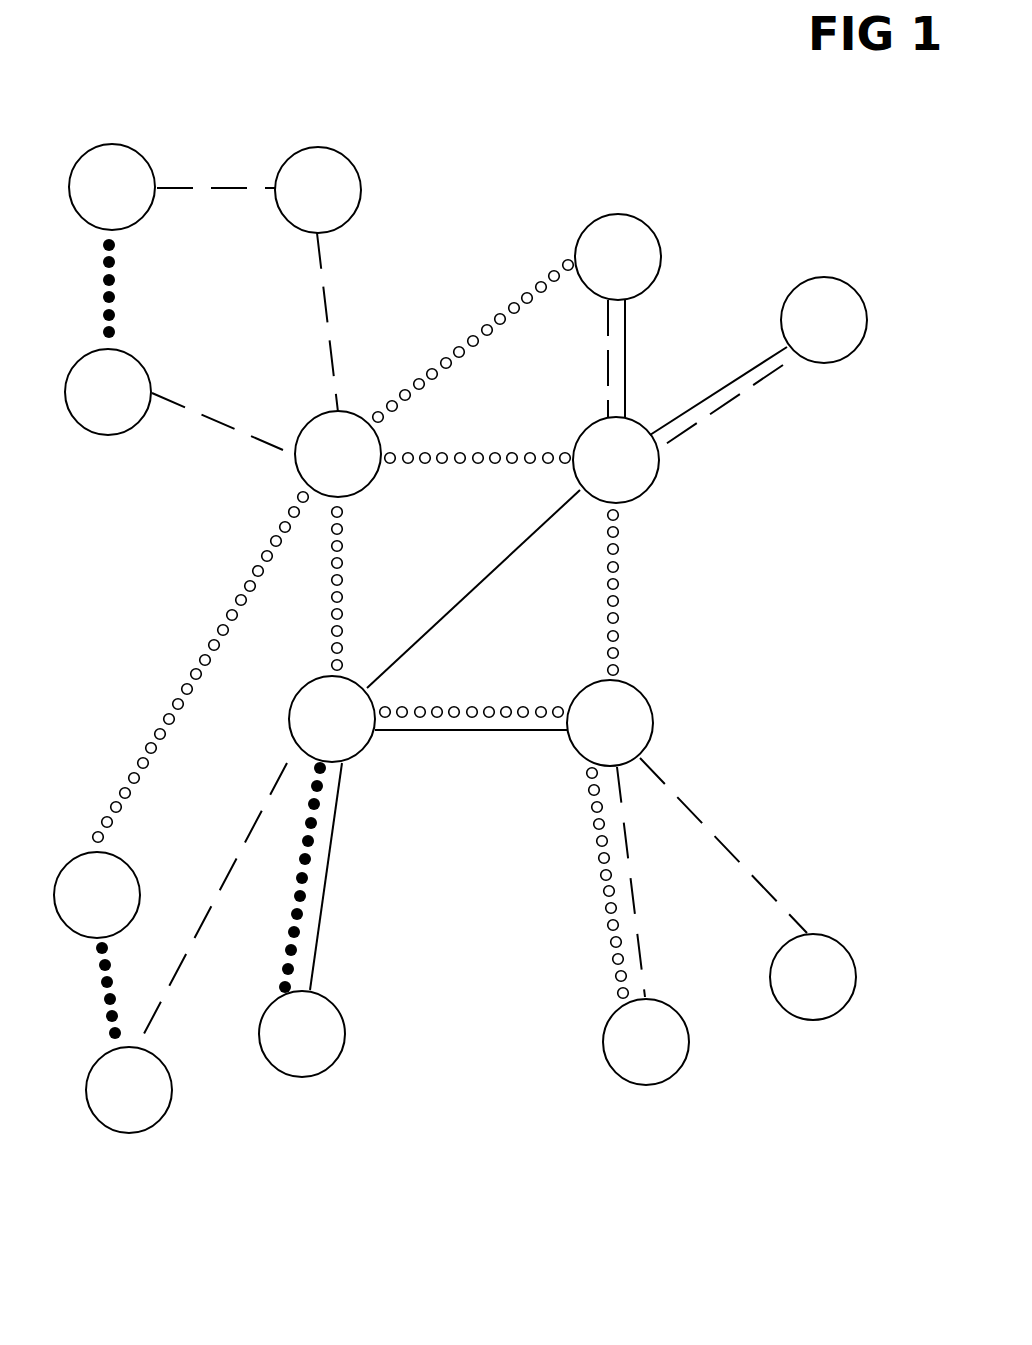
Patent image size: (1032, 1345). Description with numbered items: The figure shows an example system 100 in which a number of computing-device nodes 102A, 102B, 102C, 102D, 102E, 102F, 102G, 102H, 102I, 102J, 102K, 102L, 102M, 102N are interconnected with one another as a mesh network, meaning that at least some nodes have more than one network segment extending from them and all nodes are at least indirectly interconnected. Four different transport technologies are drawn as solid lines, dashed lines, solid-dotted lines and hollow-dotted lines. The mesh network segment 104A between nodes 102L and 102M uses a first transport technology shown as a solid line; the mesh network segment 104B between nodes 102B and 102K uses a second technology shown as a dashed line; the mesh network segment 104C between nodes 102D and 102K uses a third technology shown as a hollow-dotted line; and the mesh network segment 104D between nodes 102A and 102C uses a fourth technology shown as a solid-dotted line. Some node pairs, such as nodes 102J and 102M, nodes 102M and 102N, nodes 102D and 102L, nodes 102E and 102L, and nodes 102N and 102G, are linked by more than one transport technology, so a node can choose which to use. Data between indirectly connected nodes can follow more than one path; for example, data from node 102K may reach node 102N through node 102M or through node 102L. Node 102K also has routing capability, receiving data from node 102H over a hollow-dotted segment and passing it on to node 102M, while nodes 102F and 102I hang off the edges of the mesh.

The system 100 is at (468, 1090).
The node 102A is at (85, 199).
The node 102B is at (291, 202).
The node 102C is at (81, 404).
The node 102D is at (591, 269).
The node 102E is at (797, 332).
The node 102F is at (787, 989).
The node 102G is at (618, 1054).
The node 102H is at (70, 907).
The node 102I is at (107, 1102).
The node 102J is at (276, 1046).
The node 102K is at (311, 466).
The node 102L is at (590, 472).
The node 102M is at (303, 731).
The node 102N is at (582, 735).
The mesh network segment 104A is at (473, 592).
The mesh network segment 104B is at (326, 305).
The mesh network segment 104C is at (478, 333).
The mesh network segment 104D is at (117, 297).